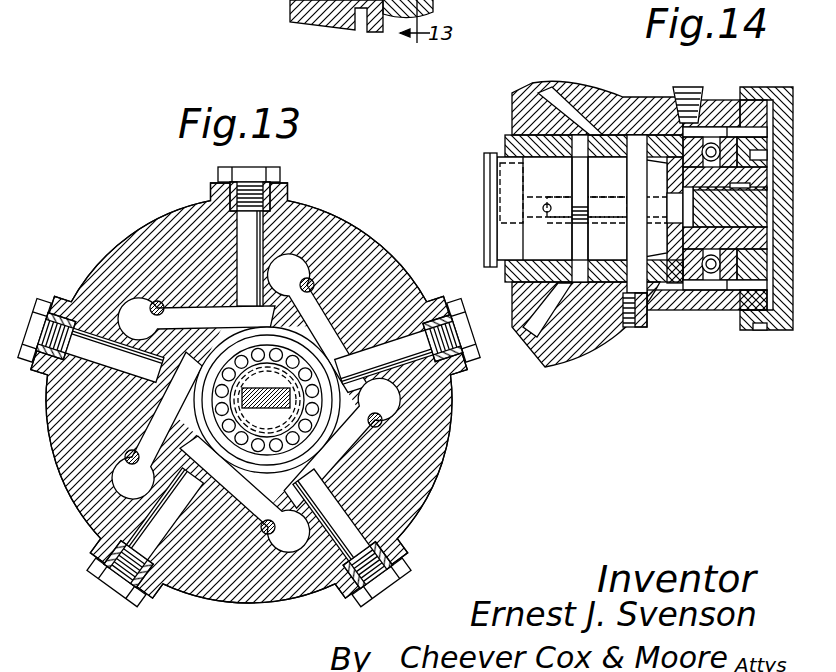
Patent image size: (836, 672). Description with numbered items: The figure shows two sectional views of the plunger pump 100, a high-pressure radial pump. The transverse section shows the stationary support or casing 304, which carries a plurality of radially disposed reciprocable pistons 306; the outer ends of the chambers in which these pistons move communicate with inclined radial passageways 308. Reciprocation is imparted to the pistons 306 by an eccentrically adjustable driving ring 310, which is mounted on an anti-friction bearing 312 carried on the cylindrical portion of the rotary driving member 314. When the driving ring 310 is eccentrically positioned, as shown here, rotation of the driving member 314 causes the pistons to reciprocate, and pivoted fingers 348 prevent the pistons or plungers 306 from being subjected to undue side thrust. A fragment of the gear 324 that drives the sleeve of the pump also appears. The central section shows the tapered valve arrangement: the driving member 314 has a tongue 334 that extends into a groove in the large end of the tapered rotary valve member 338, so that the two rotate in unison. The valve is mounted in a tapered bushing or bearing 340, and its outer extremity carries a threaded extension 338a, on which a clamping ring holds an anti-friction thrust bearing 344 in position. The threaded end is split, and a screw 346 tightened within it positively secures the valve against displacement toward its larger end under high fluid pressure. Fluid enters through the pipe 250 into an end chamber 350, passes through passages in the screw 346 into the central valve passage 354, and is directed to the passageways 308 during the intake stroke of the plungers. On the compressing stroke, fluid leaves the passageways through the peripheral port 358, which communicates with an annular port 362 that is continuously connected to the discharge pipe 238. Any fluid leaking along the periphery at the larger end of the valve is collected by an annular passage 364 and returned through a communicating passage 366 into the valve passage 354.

In FIG. 13, the plunger pump 100 is at (125, 208).
In FIG. 13, the stationary support or casing 304 is at (357, 243).
In FIG. 13, the pistons 306 is at (98, 343).
In FIG. 13, the eccentrically adjustable driving ring 310 is at (335, 447).
In FIG. 13, the anti-friction bearing 312 is at (323, 480).
In FIG. 13, the rotary driving member 314 is at (253, 378).
In FIG. 13, the tongue 334 is at (258, 401).
In FIG. 14, the tongue 334 is at (481, 240).
In FIG. 13, the pivoted fingers 348 is at (212, 317).
In FIG. 13, the gear 324 is at (300, 8).
In FIG. 14, the inclined radial passageways 308 is at (547, 83).
In FIG. 14, the tapered bushing or bearing 340 is at (625, 97).
In FIG. 14, the anti-friction thrust bearing 344 is at (725, 143).
In FIG. 14, the end chamber 350 is at (765, 100).
In FIG. 14, the central valve passage 354 is at (667, 290).
In FIG. 14, the pipe 250 is at (687, 87).
In FIG. 14, the annular passage 364 is at (523, 237).
In FIG. 14, the communicating passage 366 is at (525, 207).
In FIG. 14, the rotary valve member 338 is at (590, 282).
In FIG. 14, the threaded extension 338a is at (720, 249).
In FIG. 14, the peripheral port 358 is at (578, 195).
In FIG. 14, the annular port 362 is at (633, 177).
In FIG. 14, the discharge pipe 238 is at (640, 327).
In FIG. 14, the screw 346 is at (790, 230).